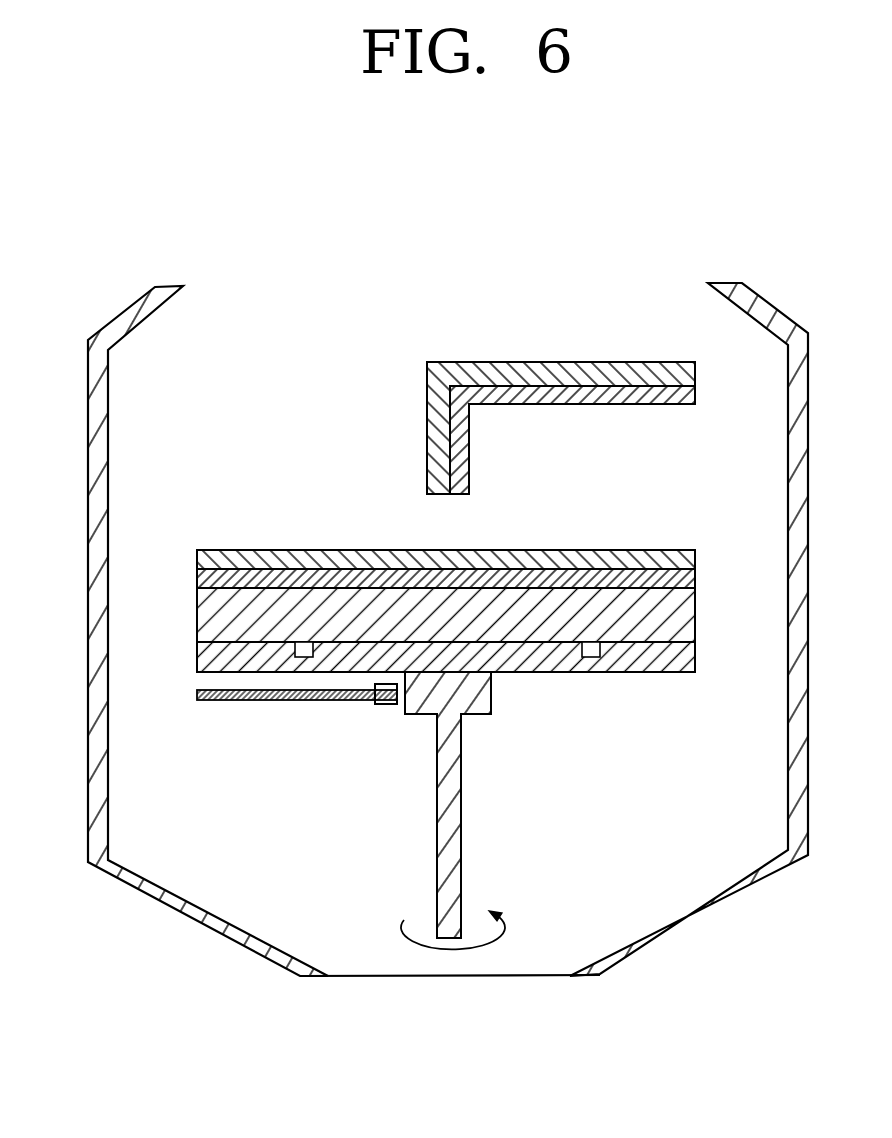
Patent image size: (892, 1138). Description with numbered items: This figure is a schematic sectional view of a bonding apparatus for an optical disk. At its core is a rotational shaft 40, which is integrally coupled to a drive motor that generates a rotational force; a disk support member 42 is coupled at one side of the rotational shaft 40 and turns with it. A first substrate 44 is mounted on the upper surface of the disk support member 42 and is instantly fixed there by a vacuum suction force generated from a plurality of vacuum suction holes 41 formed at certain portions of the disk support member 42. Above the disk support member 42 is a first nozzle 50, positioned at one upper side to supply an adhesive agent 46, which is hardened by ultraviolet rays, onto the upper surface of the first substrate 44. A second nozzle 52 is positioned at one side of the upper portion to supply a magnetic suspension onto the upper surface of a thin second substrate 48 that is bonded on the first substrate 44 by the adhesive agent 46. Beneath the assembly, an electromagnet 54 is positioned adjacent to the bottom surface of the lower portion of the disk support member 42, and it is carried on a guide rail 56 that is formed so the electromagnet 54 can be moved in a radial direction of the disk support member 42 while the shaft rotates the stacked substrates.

The rotational shaft 40 is at (458, 832).
The vacuum suction holes 41 is at (593, 659).
The disk support member 42 is at (697, 652).
The first substrate 44 is at (697, 617).
The adhesive agent 46 is at (697, 578).
The second substrate 48 is at (697, 550).
The first nozzle 50 is at (523, 375).
The second nozzle 52 is at (538, 396).
The electromagnet 54 is at (385, 706).
The guide rail 56 is at (265, 700).